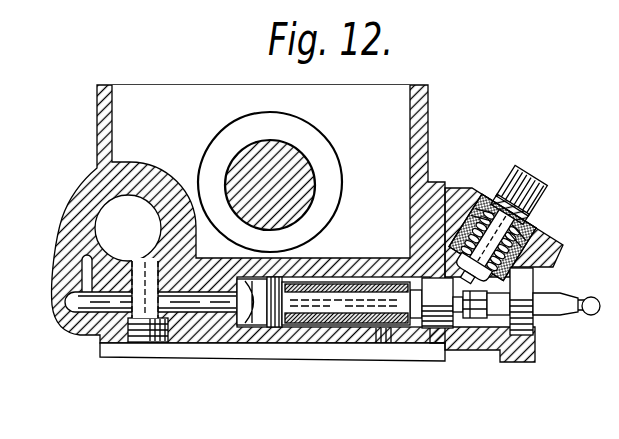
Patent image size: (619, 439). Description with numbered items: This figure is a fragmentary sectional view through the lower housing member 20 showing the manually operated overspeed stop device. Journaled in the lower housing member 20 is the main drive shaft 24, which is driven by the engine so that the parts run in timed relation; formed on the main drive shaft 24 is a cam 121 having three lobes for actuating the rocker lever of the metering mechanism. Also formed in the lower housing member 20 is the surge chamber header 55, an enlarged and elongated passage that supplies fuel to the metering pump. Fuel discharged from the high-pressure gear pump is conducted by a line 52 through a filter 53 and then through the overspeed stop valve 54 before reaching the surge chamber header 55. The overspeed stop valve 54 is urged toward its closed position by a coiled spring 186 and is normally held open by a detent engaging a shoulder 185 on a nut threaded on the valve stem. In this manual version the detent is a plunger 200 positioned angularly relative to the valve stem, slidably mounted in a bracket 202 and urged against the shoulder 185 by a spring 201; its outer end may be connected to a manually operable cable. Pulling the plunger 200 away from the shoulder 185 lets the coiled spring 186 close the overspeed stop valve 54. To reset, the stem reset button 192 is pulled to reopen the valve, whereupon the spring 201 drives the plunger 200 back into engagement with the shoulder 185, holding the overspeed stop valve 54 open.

The lower housing member 20 is at (104, 112).
The main drive shaft 24 is at (291, 174).
The cam 121 is at (333, 217).
The surge chamber header 55 is at (100, 220).
The plunger 200 is at (497, 207).
The bracket 202 is at (540, 237).
The spring 201 is at (538, 270).
The stem reset button 192 is at (569, 317).
The shoulder 185 is at (466, 337).
The overspeed stop valve 54 is at (253, 321).
The coiled spring 186 is at (262, 298).
The filter 53 is at (318, 312).
The line 52 is at (387, 336).